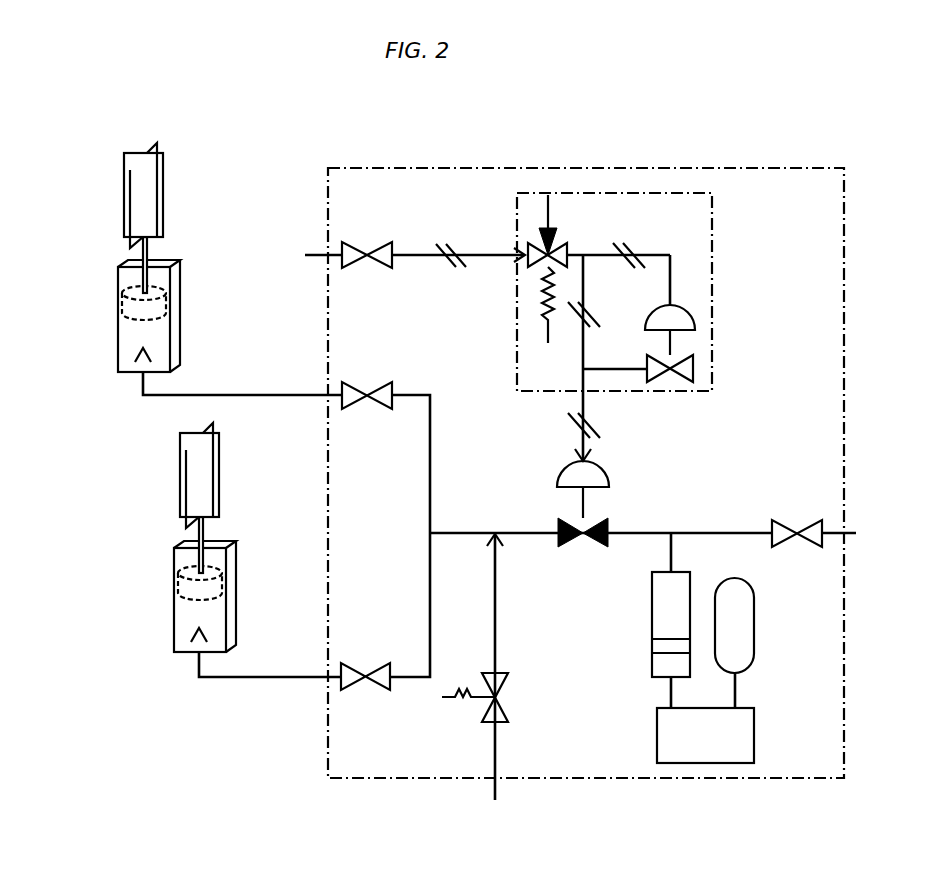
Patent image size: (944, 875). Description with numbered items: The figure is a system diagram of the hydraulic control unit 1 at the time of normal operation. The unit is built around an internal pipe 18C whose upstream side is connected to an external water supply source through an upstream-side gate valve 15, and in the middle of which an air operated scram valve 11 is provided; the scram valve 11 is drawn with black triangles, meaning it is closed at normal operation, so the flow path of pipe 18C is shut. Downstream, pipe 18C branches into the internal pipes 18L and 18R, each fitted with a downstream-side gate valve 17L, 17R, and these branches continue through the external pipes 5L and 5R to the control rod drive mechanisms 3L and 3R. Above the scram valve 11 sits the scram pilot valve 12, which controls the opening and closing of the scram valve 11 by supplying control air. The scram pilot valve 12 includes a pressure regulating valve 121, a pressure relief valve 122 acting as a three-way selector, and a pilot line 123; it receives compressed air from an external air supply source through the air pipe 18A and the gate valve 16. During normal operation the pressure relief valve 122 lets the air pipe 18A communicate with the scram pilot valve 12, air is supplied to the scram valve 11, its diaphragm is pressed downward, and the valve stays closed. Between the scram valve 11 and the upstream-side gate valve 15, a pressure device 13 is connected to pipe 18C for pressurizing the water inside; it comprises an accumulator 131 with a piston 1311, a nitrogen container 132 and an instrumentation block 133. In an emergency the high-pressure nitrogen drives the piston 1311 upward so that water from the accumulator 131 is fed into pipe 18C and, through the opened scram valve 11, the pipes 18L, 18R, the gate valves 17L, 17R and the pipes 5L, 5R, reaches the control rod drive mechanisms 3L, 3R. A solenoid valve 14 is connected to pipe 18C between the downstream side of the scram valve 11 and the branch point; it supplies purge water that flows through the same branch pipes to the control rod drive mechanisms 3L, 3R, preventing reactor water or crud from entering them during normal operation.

The hydraulic control unit 1 is at (748, 168).
The scram pilot valve 12 is at (712, 226).
The pressure relief valve 122 is at (540, 237).
The pilot line 123 is at (655, 255).
The pressure regulating valve 121 is at (695, 318).
The gate valve 16 is at (378, 242).
The air pipe 18A is at (427, 266).
The air operated scram valve 11 is at (556, 470).
The internal pipe 18C is at (699, 533).
The upstream-side gate valve 15 is at (787, 519).
The internal pipe 18R is at (431, 438).
The internal pipe 18L is at (430, 574).
The downstream-side gate valve 17R is at (352, 382).
The downstream-side gate valve 17L is at (380, 663).
The solenoid valve 14 is at (508, 705).
The pressure device 13 is at (701, 648).
The accumulator 131 is at (652, 608).
The piston 1311 is at (652, 646).
The nitrogen container 132 is at (745, 630).
The instrumentation block 133 is at (745, 732).
The external pipe 5R is at (250, 393).
The external pipe 5L is at (260, 680).
The control rod drive mechanism 3R is at (110, 257).
The control rod drive mechanism 3L is at (166, 537).